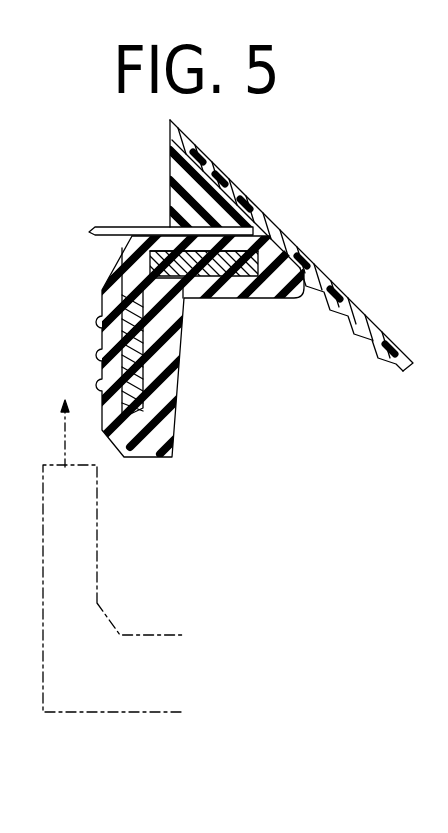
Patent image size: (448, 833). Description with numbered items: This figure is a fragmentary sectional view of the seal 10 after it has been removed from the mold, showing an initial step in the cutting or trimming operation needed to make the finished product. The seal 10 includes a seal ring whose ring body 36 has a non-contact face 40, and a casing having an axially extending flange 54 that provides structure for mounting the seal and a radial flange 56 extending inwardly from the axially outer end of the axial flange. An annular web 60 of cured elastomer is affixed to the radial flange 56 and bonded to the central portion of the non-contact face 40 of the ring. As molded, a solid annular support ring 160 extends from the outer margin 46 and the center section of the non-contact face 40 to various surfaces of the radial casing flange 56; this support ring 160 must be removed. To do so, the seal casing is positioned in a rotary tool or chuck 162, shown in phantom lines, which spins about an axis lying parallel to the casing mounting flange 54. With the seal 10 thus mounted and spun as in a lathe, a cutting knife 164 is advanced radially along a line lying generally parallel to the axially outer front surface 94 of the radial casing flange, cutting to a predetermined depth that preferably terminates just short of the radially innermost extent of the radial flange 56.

The seal 10 is at (231, 415).
The ring body 36 is at (270, 221).
The non-contact face 40 is at (217, 193).
The outer margin 46 is at (197, 153).
The axially extending flange 54 is at (135, 358).
The radial flange 56 is at (228, 267).
The annular web of cured elastomer 60 is at (267, 262).
The axially outer front surface 94 is at (198, 244).
The solid annular support ring 160 is at (231, 287).
The rotary tool or chuck 162 is at (90, 535).
The cutting knife 164 is at (92, 224).